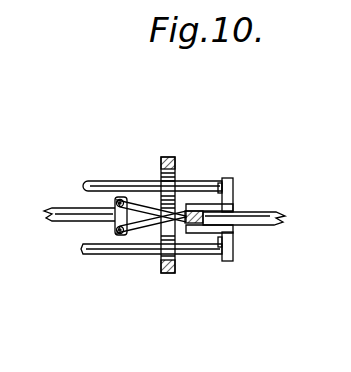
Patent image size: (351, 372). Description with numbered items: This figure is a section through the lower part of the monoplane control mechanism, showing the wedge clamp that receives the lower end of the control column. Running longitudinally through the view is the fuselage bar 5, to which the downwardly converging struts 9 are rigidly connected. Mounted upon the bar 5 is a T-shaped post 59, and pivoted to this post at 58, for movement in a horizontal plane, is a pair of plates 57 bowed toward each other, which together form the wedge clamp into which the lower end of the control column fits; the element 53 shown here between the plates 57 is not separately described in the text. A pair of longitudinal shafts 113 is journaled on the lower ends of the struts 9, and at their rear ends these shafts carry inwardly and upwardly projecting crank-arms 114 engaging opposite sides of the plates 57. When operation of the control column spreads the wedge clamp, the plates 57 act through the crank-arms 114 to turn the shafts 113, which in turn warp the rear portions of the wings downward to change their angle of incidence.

The bar 5 is at (112, 209).
The struts 9 is at (172, 157).
The shaft 53 is at (232, 210).
The plates 57 is at (198, 208).
The pivot 58 is at (117, 200).
The T-shaped post 59 is at (117, 215).
The longitudinal shafts 113 is at (131, 181).
The crank-arms 114 is at (231, 192).